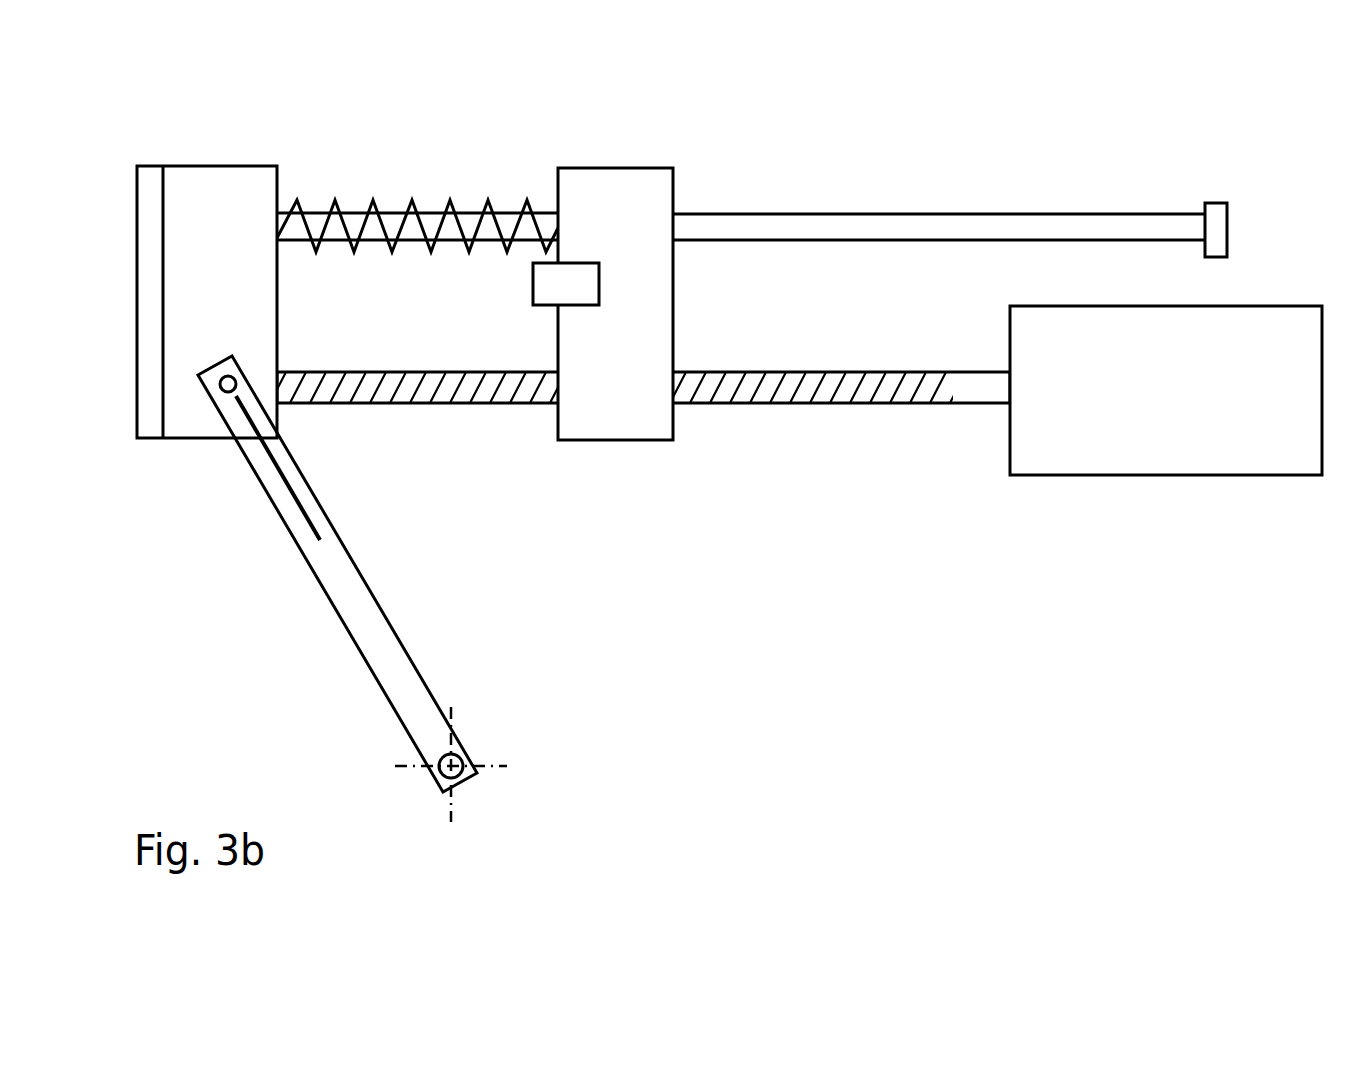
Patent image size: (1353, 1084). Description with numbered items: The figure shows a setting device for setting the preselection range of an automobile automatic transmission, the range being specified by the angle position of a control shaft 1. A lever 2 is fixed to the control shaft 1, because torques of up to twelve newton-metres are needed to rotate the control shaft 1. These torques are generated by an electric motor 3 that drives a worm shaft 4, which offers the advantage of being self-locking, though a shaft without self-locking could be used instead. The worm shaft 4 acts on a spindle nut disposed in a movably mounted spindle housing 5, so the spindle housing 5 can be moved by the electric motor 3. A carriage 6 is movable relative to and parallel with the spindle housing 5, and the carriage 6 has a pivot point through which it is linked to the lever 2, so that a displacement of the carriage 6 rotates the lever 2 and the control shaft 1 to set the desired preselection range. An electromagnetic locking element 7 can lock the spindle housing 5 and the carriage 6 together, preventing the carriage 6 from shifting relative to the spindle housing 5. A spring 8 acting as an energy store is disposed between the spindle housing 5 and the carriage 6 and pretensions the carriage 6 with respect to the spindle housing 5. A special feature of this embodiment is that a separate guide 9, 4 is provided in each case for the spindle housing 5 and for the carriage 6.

The control shaft 1 is at (463, 753).
The lever 2 is at (397, 653).
The electric motor 3 is at (1105, 449).
The worm shaft 4 is at (828, 390).
The spindle housing 5 is at (633, 195).
The carriage 6 is at (232, 187).
The electromagnetic locking element 7 is at (547, 283).
The spring 8 is at (410, 205).
The guide 9 is at (913, 222).